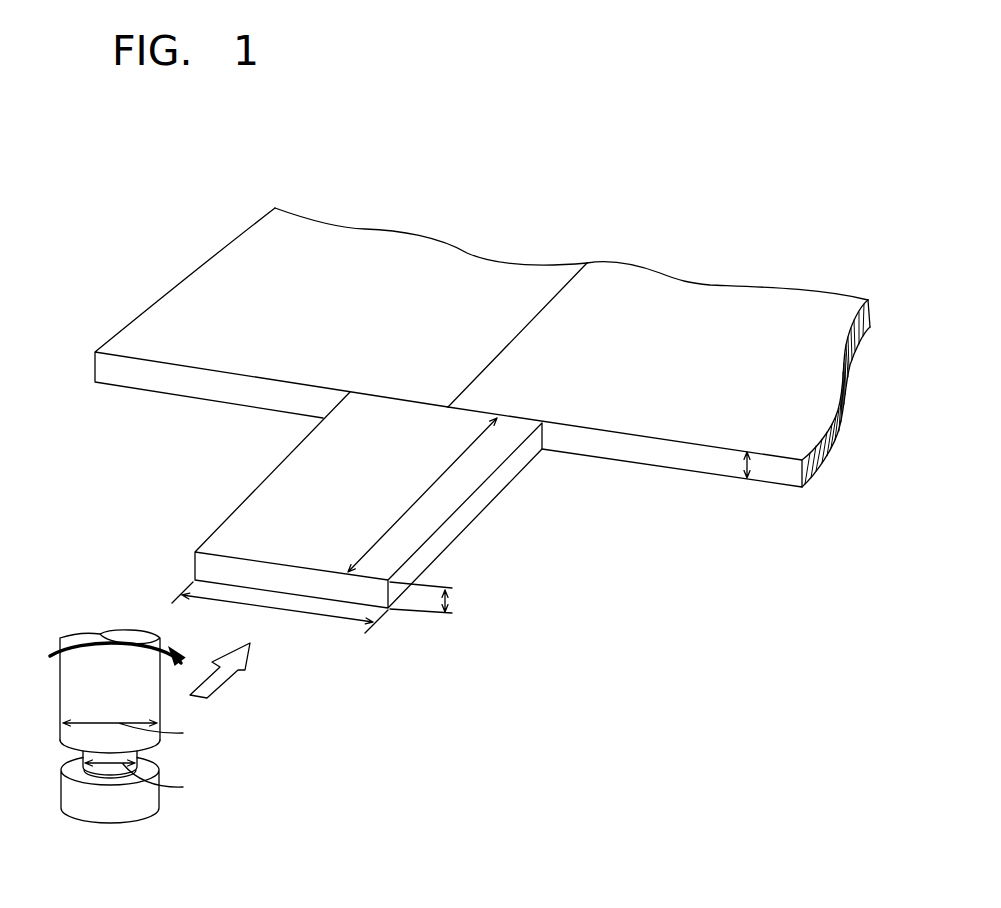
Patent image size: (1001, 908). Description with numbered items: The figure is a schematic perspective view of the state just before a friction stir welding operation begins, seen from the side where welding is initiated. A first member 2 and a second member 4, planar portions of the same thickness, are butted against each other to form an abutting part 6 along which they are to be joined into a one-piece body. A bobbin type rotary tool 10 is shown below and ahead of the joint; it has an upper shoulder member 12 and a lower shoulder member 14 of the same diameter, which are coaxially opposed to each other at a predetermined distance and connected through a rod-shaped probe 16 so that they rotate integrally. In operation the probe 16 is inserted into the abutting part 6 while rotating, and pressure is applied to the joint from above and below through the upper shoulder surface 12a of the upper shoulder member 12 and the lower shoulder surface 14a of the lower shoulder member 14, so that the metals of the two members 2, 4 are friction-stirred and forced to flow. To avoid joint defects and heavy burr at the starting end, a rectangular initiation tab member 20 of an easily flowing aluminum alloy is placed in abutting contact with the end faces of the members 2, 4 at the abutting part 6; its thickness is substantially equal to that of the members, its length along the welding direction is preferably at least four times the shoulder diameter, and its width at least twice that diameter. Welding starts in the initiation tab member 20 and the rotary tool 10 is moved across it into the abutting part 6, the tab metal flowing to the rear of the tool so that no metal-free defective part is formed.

The first member 2 is at (297, 320).
The second member 4 is at (765, 343).
The abutting part 6 is at (550, 297).
The rotary tool 10 is at (153, 705).
The upper shoulder member 12 is at (93, 658).
The upper shoulder surface 12a is at (153, 748).
The lower shoulder member 14 is at (107, 807).
The lower shoulder surface 14a is at (82, 775).
The probe 16 is at (107, 770).
The initiation tab member 20 is at (384, 450).